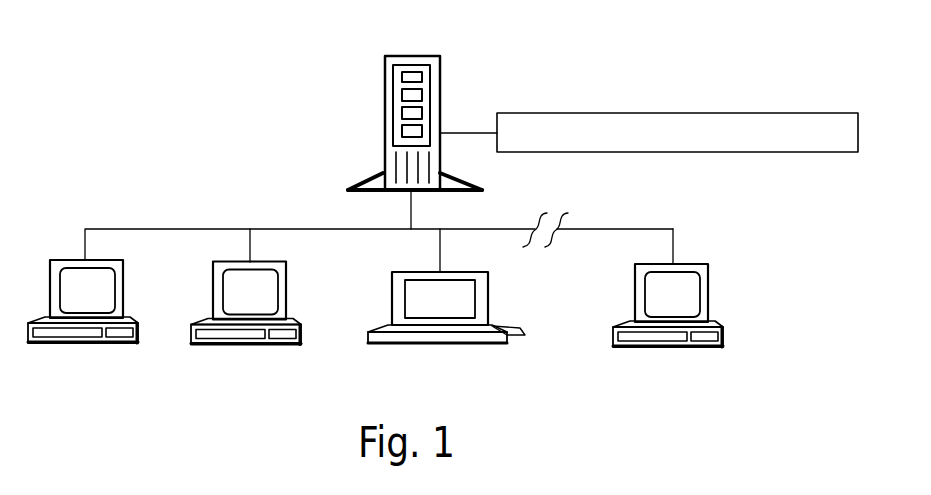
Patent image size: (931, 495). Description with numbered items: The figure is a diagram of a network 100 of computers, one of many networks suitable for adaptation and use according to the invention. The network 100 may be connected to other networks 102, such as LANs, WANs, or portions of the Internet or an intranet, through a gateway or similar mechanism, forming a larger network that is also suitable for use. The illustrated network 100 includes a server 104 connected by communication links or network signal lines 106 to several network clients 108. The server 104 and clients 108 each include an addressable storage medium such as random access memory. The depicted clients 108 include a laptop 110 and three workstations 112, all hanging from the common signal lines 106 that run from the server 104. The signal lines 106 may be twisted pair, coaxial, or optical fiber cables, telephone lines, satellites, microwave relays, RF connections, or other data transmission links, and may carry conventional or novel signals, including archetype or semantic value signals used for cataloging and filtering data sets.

The network 100 is at (110, 69).
The other networks 102 is at (833, 146).
The server 104 is at (387, 123).
The network signal lines 106 is at (379, 230).
The network clients 108 is at (401, 326).
The laptop 110 is at (471, 327).
The workstation 112 is at (401, 326).